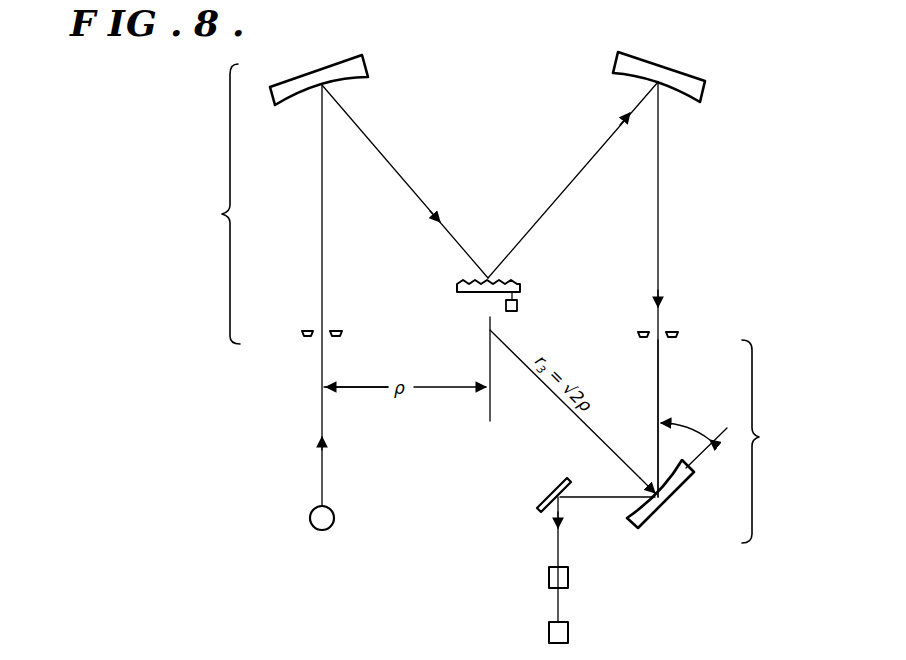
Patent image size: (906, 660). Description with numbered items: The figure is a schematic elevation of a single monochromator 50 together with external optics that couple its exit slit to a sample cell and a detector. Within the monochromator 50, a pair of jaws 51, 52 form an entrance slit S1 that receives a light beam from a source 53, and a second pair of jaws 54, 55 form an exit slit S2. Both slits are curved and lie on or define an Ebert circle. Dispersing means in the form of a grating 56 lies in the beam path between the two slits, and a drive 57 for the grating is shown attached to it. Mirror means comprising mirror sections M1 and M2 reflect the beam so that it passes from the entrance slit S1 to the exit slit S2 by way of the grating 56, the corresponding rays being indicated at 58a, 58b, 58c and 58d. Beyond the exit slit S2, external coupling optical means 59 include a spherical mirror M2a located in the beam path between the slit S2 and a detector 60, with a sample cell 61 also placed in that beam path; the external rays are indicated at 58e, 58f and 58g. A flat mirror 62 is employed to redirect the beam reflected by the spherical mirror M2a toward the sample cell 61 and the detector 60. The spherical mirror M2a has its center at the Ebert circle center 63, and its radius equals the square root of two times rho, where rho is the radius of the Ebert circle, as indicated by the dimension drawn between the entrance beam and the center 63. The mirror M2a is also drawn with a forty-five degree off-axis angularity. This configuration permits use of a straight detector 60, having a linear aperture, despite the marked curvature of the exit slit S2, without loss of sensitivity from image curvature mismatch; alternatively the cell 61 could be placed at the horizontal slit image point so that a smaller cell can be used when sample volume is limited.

The single monochromator 50 is at (130, 204).
The jaw 51 is at (306, 330).
The jaw 52 is at (342, 335).
The source 53 is at (310, 518).
The jaw 54 is at (644, 338).
The jaw 55 is at (674, 332).
The grating 56 is at (517, 282).
The drive 57 is at (518, 308).
The ray 58a is at (320, 155).
The ray 58b is at (414, 200).
The ray 58c is at (588, 163).
The ray 58d is at (660, 199).
The ray 58e is at (660, 393).
The ray 58f is at (584, 498).
The ray 58g is at (557, 538).
The external coupling optical means 59 is at (801, 441).
The detector 60 is at (568, 636).
The sample cell 61 is at (568, 580).
The flat mirror 62 is at (552, 482).
The Ebert circle center 63 is at (489, 333).
The mirror section M1 is at (357, 53).
The mirror section M2 is at (703, 80).
The spherical mirror M2a is at (643, 531).
The entrance slit S1 is at (318, 338).
The exit slit S2 is at (670, 338).